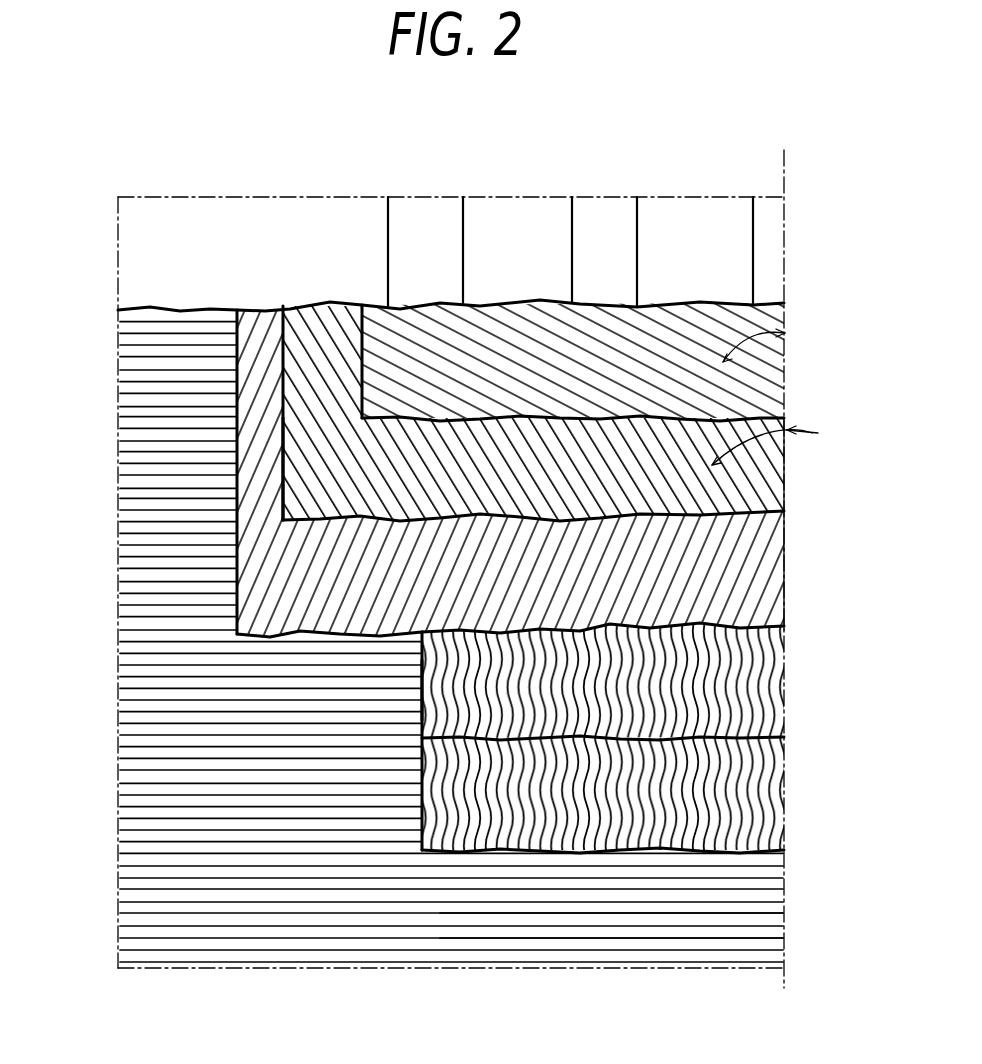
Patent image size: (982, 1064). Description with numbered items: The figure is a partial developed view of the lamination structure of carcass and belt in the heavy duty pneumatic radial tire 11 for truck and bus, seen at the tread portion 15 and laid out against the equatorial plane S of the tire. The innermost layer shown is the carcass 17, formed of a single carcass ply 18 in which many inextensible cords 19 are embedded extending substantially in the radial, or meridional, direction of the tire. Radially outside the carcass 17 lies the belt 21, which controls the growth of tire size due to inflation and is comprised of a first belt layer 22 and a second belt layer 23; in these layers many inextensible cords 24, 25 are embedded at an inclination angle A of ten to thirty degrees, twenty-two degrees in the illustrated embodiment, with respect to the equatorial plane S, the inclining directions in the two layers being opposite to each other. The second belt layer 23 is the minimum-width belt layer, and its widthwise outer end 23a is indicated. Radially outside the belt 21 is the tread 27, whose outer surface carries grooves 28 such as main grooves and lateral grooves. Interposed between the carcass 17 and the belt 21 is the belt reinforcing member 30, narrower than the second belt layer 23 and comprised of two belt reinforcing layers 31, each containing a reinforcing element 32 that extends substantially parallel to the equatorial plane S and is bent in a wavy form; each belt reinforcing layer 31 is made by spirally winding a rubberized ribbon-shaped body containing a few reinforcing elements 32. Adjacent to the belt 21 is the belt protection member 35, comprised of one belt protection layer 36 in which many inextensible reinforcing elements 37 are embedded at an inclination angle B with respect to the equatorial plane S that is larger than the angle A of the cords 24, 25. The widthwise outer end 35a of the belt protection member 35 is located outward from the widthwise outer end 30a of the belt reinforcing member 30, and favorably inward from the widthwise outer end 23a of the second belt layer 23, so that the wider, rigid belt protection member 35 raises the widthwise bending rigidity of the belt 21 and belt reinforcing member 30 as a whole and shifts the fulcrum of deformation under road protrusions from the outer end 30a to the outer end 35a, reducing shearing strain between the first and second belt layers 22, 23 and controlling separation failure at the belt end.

The heavy duty pneumatic radial tire 11 is at (290, 182).
The tread portion 15 is at (322, 196).
The carcass 17 is at (390, 940).
The carcass ply 18 is at (555, 933).
The cords 19 is at (492, 903).
The belt 21 is at (788, 565).
The first belt layer 22 is at (762, 543).
The second belt layer 23 is at (748, 489).
The widthwise outer end of the second belt layer 23a is at (282, 452).
The cords 24 is at (758, 577).
The cords 25 is at (297, 333).
The tread 27 is at (527, 217).
The grooves 28 is at (390, 220).
The belt reinforcing member 30 is at (790, 681).
The widthwise outer end of the belt reinforcing member 30a is at (420, 693).
The belt reinforcing layer 31 is at (755, 659).
The reinforcing element 32 is at (750, 720).
The belt protection member 35 is at (589, 303).
The widthwise outer end of the belt protection member 35a is at (347, 305).
The belt protection layer 36 is at (515, 325).
The reinforcing elements 37 is at (438, 333).
The equatorial plane S is at (783, 178).
The inclination angle A is at (757, 438).
The inclination angle B is at (738, 330).